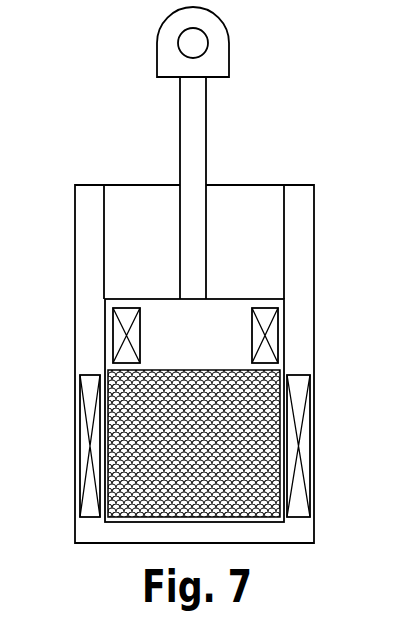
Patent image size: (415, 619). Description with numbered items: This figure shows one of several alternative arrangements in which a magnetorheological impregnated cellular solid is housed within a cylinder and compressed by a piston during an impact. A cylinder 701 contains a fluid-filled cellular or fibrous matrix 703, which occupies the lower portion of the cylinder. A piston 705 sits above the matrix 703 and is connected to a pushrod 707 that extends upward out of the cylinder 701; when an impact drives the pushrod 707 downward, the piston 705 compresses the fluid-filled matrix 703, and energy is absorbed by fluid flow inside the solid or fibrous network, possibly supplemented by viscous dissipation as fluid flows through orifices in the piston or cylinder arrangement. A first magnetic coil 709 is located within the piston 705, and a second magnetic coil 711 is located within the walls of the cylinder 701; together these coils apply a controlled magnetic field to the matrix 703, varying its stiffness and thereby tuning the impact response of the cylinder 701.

The cylinder 701 is at (235, 184).
The fluid-filled cellular or fibrous matrix 703 is at (284, 372).
The piston 705 is at (217, 298).
The pushrod 707 is at (180, 100).
The first magnetic coil 709 is at (252, 316).
The second magnetic coil 711 is at (80, 392).